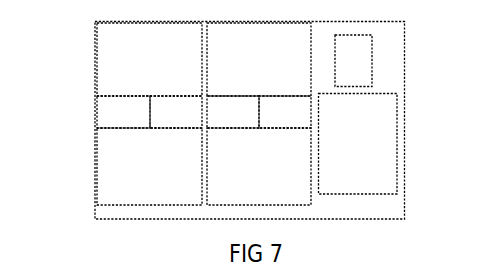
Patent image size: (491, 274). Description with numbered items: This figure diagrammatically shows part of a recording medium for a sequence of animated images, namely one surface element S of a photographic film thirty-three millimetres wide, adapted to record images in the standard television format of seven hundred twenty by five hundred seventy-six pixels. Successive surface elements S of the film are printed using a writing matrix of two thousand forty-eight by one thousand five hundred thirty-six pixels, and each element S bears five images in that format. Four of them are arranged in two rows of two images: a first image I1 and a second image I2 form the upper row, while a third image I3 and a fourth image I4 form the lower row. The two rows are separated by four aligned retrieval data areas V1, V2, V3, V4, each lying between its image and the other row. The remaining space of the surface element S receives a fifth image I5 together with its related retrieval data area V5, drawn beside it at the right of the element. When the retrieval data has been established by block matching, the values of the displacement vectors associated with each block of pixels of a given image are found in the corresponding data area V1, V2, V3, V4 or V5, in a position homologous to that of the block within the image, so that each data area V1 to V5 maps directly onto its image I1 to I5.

The surface element S is at (397, 55).
The first image I1 is at (133, 57).
The second image I2 is at (276, 56).
The third image I3 is at (167, 167).
The fourth image I4 is at (279, 166).
The fifth image I5 is at (374, 140).
The retrieval data area V1 is at (139, 113).
The retrieval data area V2 is at (248, 113).
The retrieval data area V3 is at (192, 113).
The retrieval data area V4 is at (302, 113).
The retrieval data area V5 is at (369, 57).